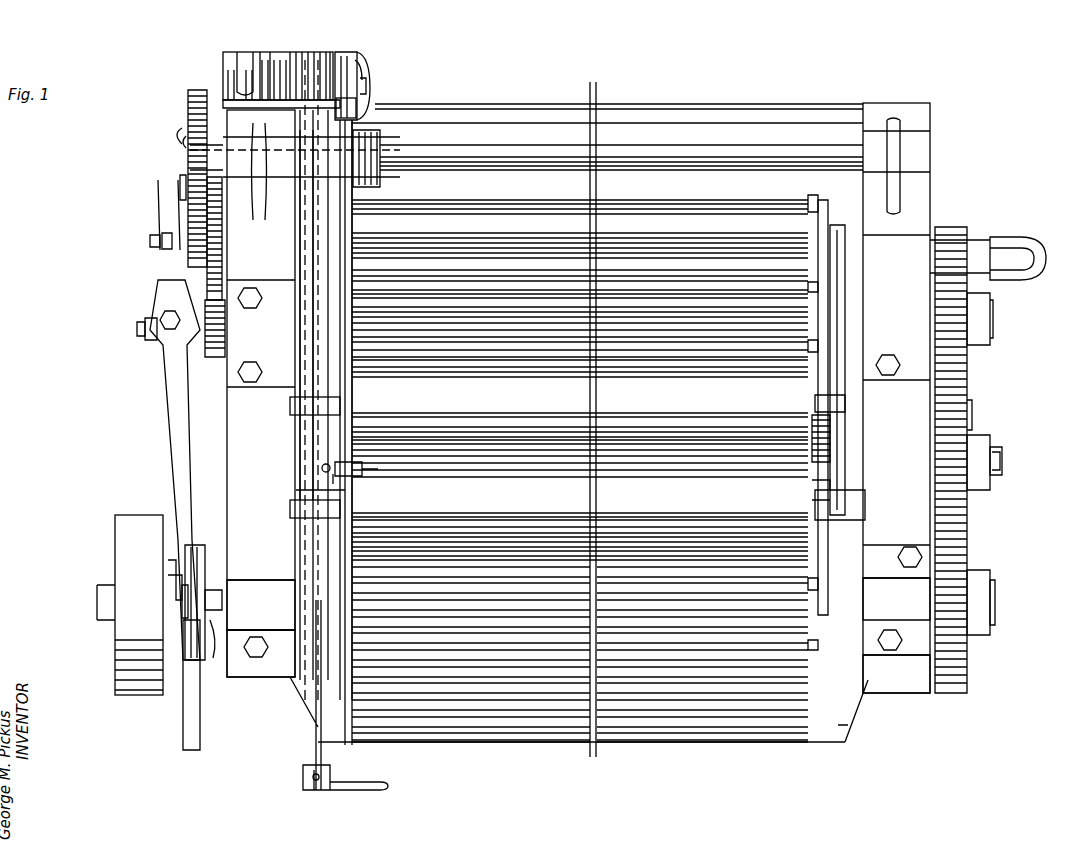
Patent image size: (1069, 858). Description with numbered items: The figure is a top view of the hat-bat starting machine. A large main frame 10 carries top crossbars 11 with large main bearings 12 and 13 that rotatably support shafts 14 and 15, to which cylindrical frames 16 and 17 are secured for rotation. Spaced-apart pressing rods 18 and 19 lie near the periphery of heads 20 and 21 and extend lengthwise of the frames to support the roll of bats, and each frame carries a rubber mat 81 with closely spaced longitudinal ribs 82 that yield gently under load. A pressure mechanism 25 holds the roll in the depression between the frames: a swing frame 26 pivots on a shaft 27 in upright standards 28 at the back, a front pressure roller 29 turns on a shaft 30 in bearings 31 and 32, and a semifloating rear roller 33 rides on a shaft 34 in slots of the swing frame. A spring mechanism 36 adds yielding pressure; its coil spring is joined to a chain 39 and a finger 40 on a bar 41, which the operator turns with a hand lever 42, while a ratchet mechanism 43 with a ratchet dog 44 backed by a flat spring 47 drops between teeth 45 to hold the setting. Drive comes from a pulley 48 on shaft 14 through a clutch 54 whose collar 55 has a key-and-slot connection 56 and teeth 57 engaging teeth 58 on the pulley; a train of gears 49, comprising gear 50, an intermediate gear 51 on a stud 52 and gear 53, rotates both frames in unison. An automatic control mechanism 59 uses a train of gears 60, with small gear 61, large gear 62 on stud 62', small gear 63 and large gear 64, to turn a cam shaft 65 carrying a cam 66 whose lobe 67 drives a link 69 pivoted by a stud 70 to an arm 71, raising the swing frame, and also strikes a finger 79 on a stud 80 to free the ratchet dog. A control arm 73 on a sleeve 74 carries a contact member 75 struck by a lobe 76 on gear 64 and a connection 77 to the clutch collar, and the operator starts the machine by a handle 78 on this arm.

The main frame 10 is at (932, 142).
The top crossbars 11 is at (256, 665).
The main bearing 12 is at (282, 620).
The main bearing 13 is at (261, 393).
The shaft 14 is at (996, 602).
The shaft 15 is at (138, 332).
The cylindrical frame 16 is at (848, 722).
The cylindrical frame 17 is at (830, 433).
The pressing rods 18 is at (812, 645).
The pressing rods 19 is at (812, 346).
The head 20 is at (822, 540).
The head 21 is at (812, 194).
The pressure mechanism 25 is at (292, 466).
The swing frame 26 is at (316, 380).
The shaft 27 is at (528, 222).
The upright standards 28 is at (902, 188).
The front pressure roller 29 is at (580, 515).
The shaft 30 is at (296, 514).
The bearing 31 is at (296, 490).
The bearing 32 is at (858, 496).
The rear roller 33 is at (580, 385).
The shaft 34 is at (296, 404).
The spring mechanism 36 is at (366, 470).
The chain 39 is at (322, 465).
The finger 40 is at (338, 478).
The bar 41 is at (314, 748).
The hand lever 42 is at (358, 788).
The ratchet mechanism 43 is at (364, 78).
The ratchet dog 44 is at (265, 58).
The teeth 45 is at (322, 60).
The flat spring 47 is at (240, 72).
The pulley 48 is at (128, 525).
The train of gears 49 is at (976, 420).
The gear 50 is at (952, 562).
The intermediate gear 51 is at (970, 490).
The stud 52 is at (1003, 461).
The gear 53 is at (960, 372).
The clutch 54 is at (172, 570).
The collar 55 is at (210, 588).
The key-and-slot connection 56 is at (222, 598).
The teeth 57 is at (180, 606).
The teeth 58 is at (175, 590).
The automatic control mechanism 59 is at (212, 108).
The train of gears 60 is at (176, 143).
The small gear 61 is at (214, 356).
The large gear 62 is at (227, 238).
The stud 62' is at (140, 239).
The small gear 63 is at (160, 260).
The large gear 64 is at (188, 88).
The cam shaft 65 is at (518, 152).
The cam 66 is at (358, 104).
The lobe 67 is at (360, 64).
The link 69 is at (375, 148).
The stud 70 is at (295, 157).
The arm 71 is at (352, 196).
The control arm 73 is at (158, 470).
The sleeve 74 is at (145, 324).
The contact member 75 is at (178, 178).
The lobe 76 is at (182, 132).
The connection 77 is at (213, 660).
The handle 78 is at (186, 728).
The finger 79 is at (333, 60).
The stud 80 is at (368, 84).
The rubber mat 81 is at (716, 712).
The ribs 82 is at (500, 690).